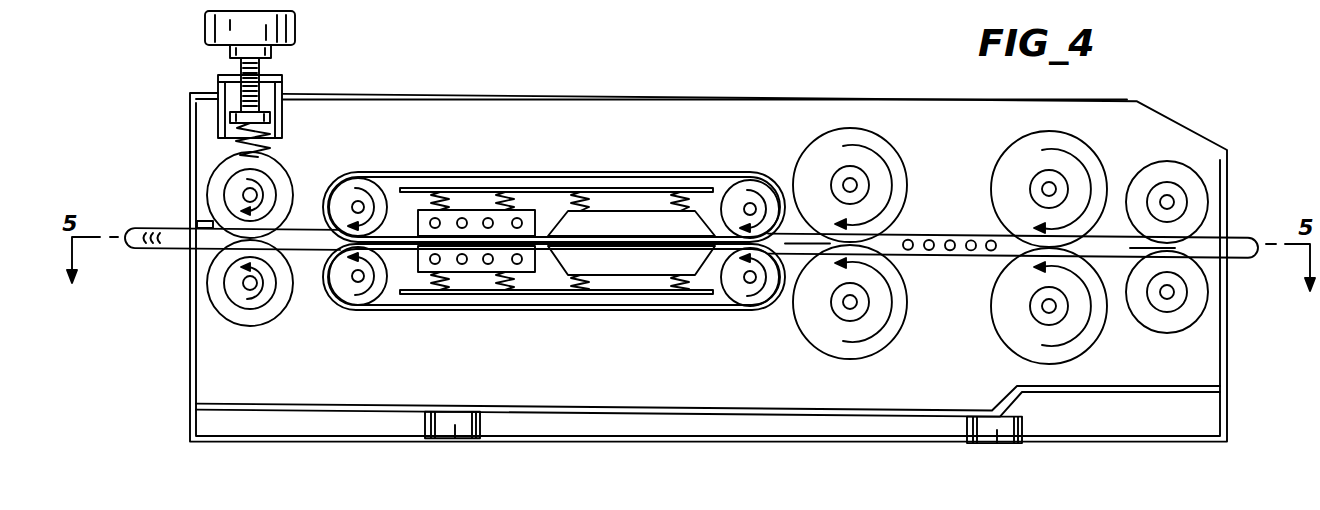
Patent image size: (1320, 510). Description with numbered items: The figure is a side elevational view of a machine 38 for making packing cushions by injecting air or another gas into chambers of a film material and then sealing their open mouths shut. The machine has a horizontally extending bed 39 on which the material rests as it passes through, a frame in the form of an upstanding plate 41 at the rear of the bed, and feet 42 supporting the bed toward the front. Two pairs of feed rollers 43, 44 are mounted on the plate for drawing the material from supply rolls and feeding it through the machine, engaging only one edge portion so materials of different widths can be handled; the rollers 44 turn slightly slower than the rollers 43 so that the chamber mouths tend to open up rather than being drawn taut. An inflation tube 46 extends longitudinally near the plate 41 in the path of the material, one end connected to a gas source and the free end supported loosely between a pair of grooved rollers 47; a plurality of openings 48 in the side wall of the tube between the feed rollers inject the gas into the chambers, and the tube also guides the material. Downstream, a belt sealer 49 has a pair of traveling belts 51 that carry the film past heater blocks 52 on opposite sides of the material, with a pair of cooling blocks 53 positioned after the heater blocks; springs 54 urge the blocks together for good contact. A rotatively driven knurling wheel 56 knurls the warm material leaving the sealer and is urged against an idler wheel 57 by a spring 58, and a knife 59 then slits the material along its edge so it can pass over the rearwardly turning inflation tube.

The machine 38 is at (600, 84).
The bed 39 is at (318, 403).
The upstanding plate 41 is at (882, 97).
The feet 42 is at (488, 432).
The feed rollers 43 is at (1090, 162).
The feed rollers 44 is at (892, 162).
The inflation tube 46 is at (166, 250).
The grooved rollers 47 is at (1198, 198).
The openings 48 is at (971, 240).
The belt sealer 49 is at (686, 162).
The traveling belts 51 is at (547, 188).
The heater blocks 52 is at (631, 213).
The cooling blocks 53 is at (476, 212).
The springs 54 is at (438, 195).
The knurling wheel 56 is at (214, 175).
The idler wheel 57 is at (214, 302).
The spring 58 is at (284, 147).
The knife 59 is at (200, 220).